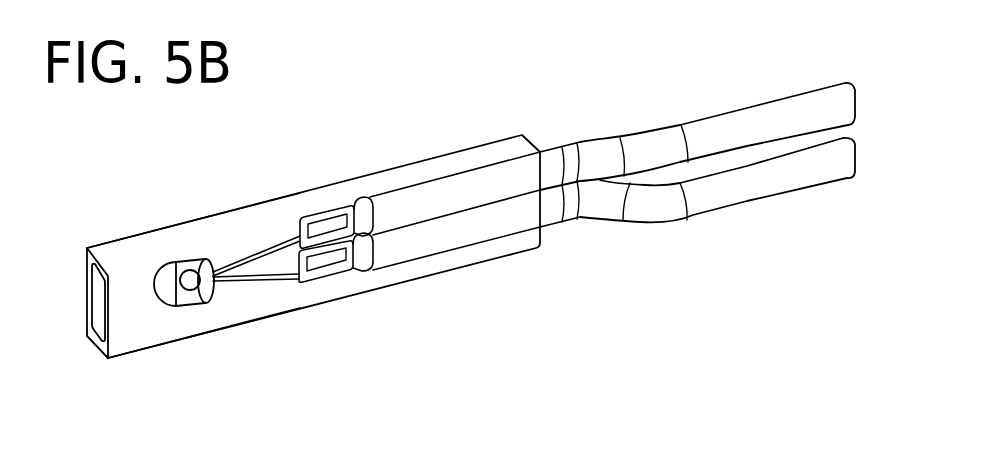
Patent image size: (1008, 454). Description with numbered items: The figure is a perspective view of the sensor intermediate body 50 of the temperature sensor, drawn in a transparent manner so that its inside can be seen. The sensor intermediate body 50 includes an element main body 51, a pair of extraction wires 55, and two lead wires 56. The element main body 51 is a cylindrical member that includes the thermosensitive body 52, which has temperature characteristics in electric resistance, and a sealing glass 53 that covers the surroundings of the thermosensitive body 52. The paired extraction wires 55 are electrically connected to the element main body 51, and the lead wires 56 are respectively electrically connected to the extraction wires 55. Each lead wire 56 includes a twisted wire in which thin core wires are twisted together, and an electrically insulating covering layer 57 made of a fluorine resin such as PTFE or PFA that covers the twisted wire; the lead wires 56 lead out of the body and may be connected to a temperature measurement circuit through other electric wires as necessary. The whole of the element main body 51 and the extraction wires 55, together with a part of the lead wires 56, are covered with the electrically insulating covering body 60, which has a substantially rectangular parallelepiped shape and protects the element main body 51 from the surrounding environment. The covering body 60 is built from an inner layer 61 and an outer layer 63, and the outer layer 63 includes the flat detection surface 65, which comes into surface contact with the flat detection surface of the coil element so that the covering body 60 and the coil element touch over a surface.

The sensor intermediate body 50 is at (436, 157).
The element main body 51 is at (245, 282).
The thermosensitive body 52 is at (166, 232).
The sealing glass 53 is at (190, 260).
The extraction wires 55 is at (269, 246).
The lead wires 56 is at (595, 138).
The covering layers 57 is at (743, 108).
The covering body 60 is at (175, 342).
The inner layer 61 is at (96, 350).
The outer layer 63 is at (101, 356).
The detection surface 65 is at (344, 186).